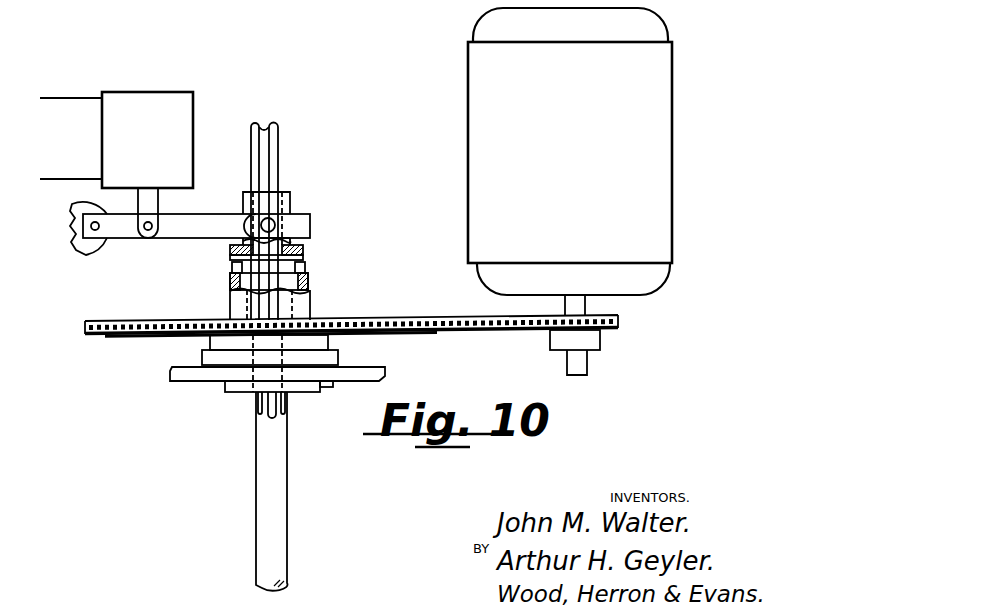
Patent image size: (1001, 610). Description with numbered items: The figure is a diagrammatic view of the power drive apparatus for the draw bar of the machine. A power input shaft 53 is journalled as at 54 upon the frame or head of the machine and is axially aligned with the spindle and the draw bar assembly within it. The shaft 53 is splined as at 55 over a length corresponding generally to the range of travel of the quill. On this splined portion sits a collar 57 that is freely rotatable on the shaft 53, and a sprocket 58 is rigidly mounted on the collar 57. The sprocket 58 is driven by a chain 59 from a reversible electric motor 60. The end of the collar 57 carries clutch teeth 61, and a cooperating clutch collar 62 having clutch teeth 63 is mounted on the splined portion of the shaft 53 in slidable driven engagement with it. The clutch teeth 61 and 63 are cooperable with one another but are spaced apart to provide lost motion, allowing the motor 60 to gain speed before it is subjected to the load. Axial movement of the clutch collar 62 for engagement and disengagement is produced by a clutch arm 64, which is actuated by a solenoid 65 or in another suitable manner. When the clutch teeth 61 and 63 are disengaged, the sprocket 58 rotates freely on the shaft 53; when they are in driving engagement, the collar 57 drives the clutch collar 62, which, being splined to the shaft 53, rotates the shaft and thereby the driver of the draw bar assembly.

The power input shaft 53 is at (273, 515).
The journal 54 is at (357, 372).
The splined portion 55 is at (272, 153).
The collar 57 is at (304, 300).
The sprocket 58 is at (422, 334).
The chain 59 is at (505, 325).
The reversible electric motor 60 is at (498, 213).
The clutch teeth 61 is at (303, 278).
The clutch collar 62 is at (307, 240).
The clutch teeth 63 is at (303, 256).
The clutch arm 64 is at (190, 226).
The solenoid 65 is at (177, 122).